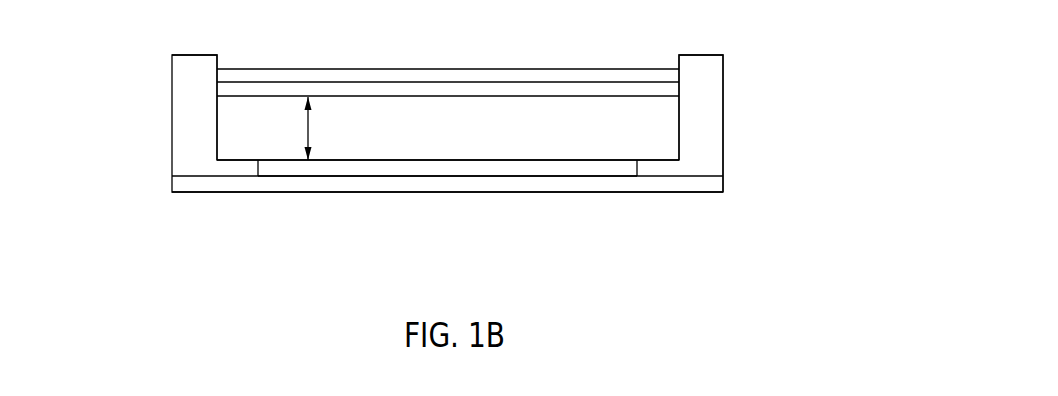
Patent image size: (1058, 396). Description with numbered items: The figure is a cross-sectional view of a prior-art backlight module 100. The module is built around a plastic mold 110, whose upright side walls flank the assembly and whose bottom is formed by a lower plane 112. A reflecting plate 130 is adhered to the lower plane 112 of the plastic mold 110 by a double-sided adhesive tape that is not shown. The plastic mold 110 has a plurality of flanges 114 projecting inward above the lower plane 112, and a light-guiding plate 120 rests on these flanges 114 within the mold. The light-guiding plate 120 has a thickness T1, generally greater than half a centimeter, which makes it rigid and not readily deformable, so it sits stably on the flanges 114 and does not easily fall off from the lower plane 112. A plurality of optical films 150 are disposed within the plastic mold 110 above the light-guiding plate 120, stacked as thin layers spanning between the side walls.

The backlight module 100 is at (758, 270).
The plastic mold 110 is at (707, 90).
The light-guiding plate 120 is at (657, 125).
The reflecting plate 130 is at (706, 185).
The optical films 150 is at (235, 74).
The flanges 114 is at (243, 166).
The lower plane 112 is at (690, 178).
The thickness T1 is at (321, 128).